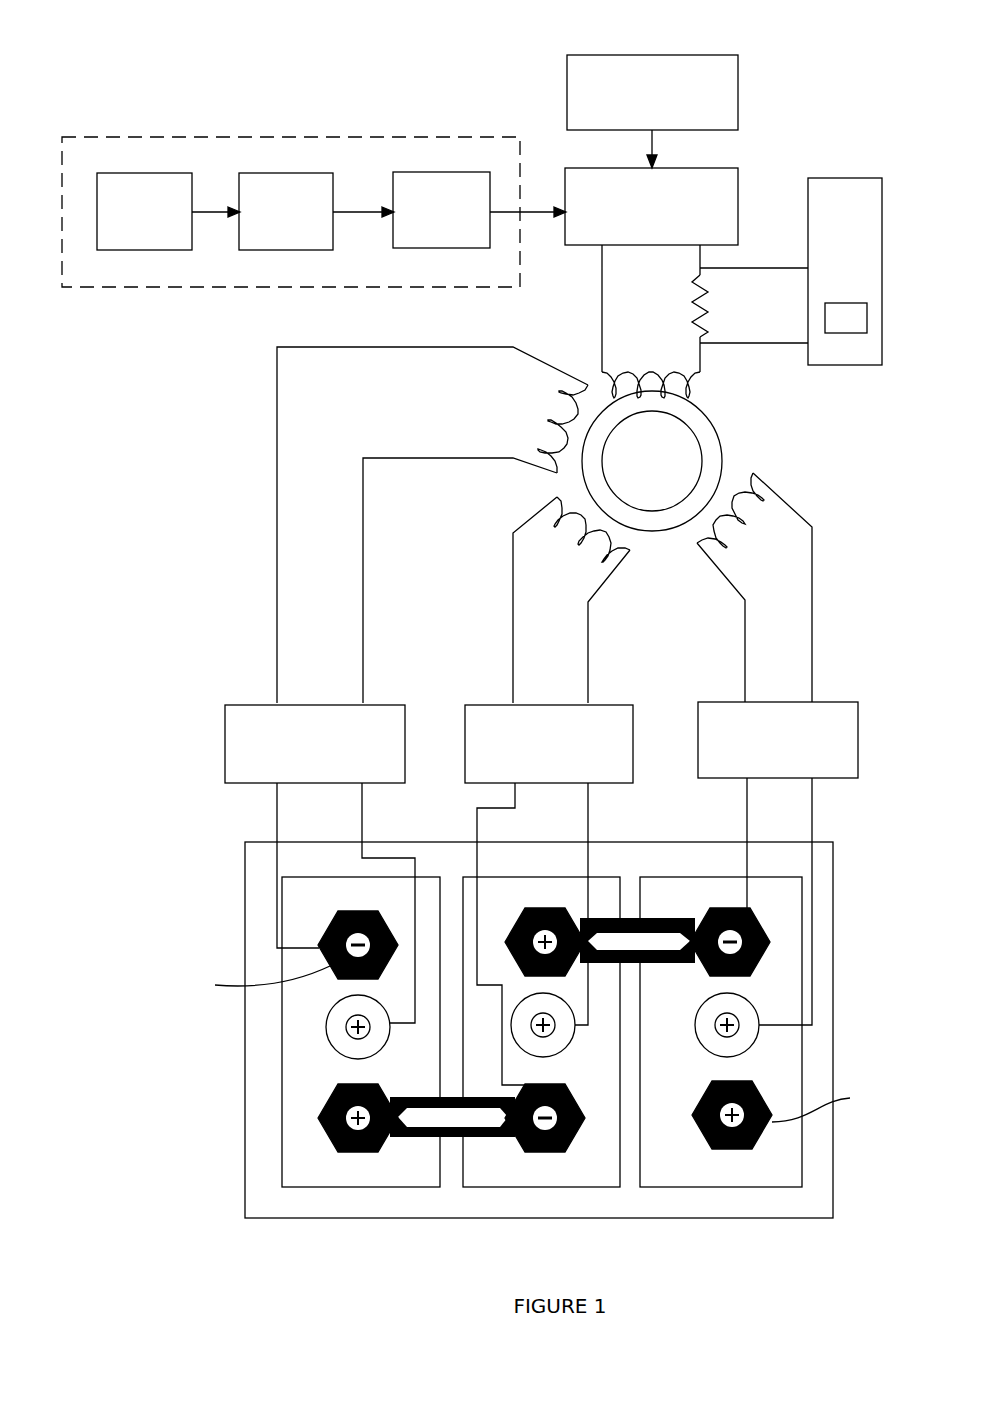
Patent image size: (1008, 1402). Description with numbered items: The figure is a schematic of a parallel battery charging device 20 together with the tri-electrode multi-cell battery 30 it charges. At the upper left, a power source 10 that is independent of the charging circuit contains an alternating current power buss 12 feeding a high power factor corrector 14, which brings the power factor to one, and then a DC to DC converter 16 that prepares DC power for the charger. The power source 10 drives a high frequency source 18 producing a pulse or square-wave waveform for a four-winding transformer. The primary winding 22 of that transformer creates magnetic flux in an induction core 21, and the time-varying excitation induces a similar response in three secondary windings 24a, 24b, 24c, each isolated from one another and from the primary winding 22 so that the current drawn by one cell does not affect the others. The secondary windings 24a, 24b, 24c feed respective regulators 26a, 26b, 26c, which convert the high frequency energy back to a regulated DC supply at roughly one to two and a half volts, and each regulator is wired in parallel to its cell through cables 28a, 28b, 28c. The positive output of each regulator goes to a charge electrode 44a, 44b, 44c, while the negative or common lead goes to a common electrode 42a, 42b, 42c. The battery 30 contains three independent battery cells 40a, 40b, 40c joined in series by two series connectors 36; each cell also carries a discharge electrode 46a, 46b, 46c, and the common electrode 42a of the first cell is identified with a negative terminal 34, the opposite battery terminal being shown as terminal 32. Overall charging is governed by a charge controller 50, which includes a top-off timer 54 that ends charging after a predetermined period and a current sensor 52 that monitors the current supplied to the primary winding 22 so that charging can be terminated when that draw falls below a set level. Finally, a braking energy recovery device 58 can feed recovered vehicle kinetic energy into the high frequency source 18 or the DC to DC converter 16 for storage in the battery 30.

The power source 10 is at (189, 300).
The alternating current power buss 12 is at (108, 173).
The high power factor corrector 14 is at (255, 173).
The DC to DC converter 16 is at (452, 172).
The high frequency source 18 is at (738, 190).
The parallel battery charging device 20 is at (579, 502).
The induction core 21 is at (717, 432).
The primary winding 22 is at (602, 325).
The secondary winding 24a is at (540, 435).
The secondary winding 24b is at (592, 574).
The secondary winding 24c is at (735, 543).
The regulator 26a is at (380, 705).
The regulator 26b is at (616, 705).
The regulator 26c is at (835, 702).
The cable 28a is at (277, 827).
The cable 28b is at (563, 824).
The cable 28c is at (750, 822).
The tri-electrode multi-cell battery 30 is at (822, 1230).
The battery positive terminal 32 is at (825, 1104).
The negative terminal 34 is at (257, 980).
The series connector 36 is at (480, 1097).
The battery cell 40a is at (352, 1187).
The battery cell 40b is at (545, 1187).
The battery cell 40c is at (735, 1187).
The common electrode 42a is at (358, 909).
The common electrode 42b is at (550, 1151).
The common electrode 42c is at (725, 907).
The charge electrode 44a is at (370, 1056).
The charge electrode 44b is at (548, 1055).
The charge electrode 44c is at (736, 1055).
The discharge electrode 46a is at (368, 1151).
The discharge electrode 46b is at (545, 907).
The discharge electrode 46c is at (737, 1149).
The charge controller 50 is at (846, 160).
The current sensor 52 is at (700, 318).
The top-off timer 54 is at (852, 333).
The braking energy recovery device 58 is at (738, 90).